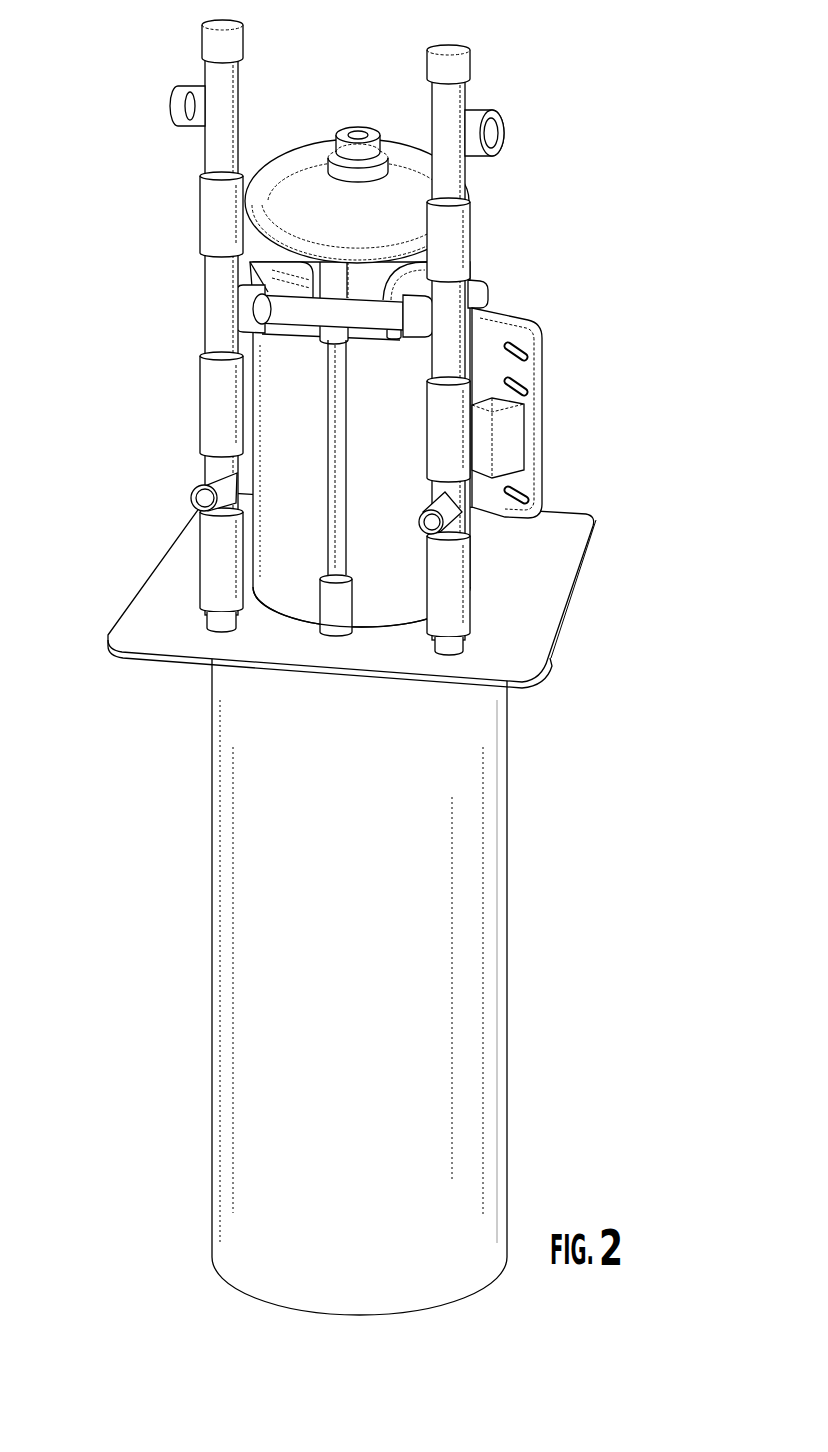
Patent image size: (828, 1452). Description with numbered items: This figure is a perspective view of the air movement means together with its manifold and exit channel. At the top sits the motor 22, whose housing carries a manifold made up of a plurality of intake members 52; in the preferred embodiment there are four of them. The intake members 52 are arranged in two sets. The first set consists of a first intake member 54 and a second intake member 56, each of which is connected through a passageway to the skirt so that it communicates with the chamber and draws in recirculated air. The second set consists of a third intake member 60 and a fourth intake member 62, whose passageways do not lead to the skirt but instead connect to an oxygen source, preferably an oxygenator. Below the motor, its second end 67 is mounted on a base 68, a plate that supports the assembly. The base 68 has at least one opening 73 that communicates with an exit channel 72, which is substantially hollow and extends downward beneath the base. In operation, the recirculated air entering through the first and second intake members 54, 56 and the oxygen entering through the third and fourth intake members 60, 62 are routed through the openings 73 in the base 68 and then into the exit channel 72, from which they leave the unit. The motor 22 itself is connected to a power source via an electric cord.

The motor 22 is at (284, 196).
The intake member 52 is at (192, 88).
The first intake member 54 is at (190, 116).
The second intake member 56 is at (478, 146).
The third intake member 60 is at (197, 497).
The fourth intake member 62 is at (450, 520).
The second end 67 is at (290, 622).
The base 68 is at (538, 577).
The exit channel 72 is at (489, 782).
The opening 73 is at (458, 656).